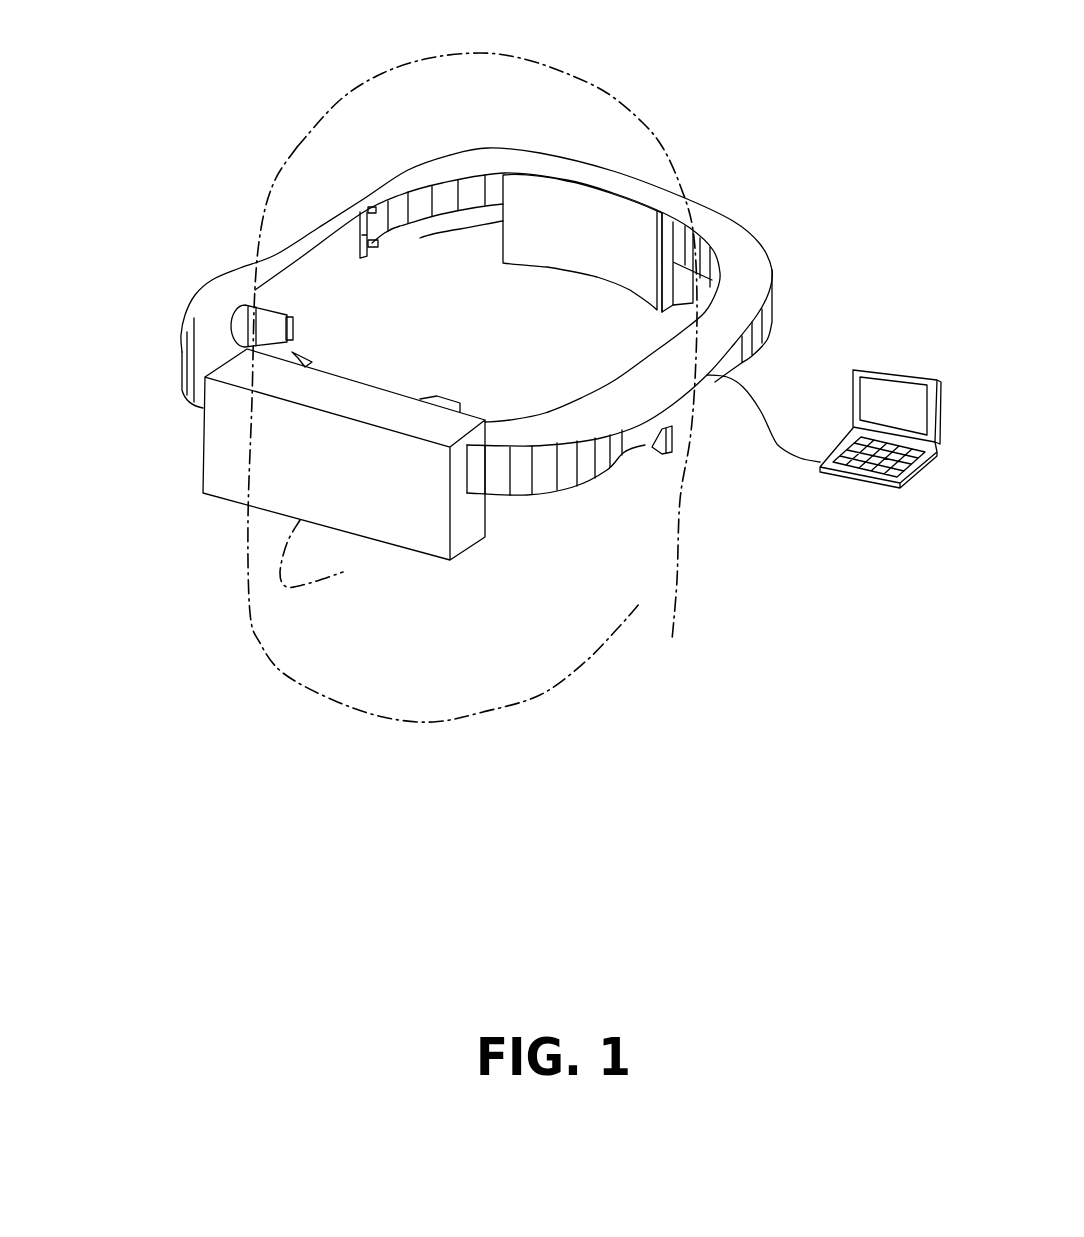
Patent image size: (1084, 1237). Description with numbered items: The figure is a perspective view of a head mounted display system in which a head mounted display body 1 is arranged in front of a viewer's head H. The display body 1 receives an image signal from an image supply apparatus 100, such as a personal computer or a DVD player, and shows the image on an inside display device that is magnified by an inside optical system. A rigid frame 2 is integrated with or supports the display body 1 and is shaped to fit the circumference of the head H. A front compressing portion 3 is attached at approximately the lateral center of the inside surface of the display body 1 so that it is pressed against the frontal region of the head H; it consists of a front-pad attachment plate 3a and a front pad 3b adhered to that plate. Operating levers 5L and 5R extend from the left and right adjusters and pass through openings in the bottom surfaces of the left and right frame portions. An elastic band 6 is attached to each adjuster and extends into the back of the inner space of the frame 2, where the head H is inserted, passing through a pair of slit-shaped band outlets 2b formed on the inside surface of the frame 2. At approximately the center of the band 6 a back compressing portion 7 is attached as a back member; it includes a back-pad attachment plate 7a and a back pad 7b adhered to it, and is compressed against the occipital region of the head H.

The head mounted display body 1 is at (290, 503).
The rigid frame 2 is at (477, 340).
The band outlets 2b is at (372, 240).
The front compressing portion 3 is at (187, 292).
The front-pad attachment plate 3a is at (250, 316).
The front pad 3b is at (300, 352).
The right operating lever 5R is at (298, 323).
The left operating lever 5L is at (673, 445).
The elastic band 6 is at (405, 225).
The back compressing portion 7 is at (697, 231).
The back-pad attachment plate 7a is at (662, 203).
The back pad 7b is at (625, 237).
The image supply apparatus 100 is at (875, 372).
The viewer's head H is at (537, 62).